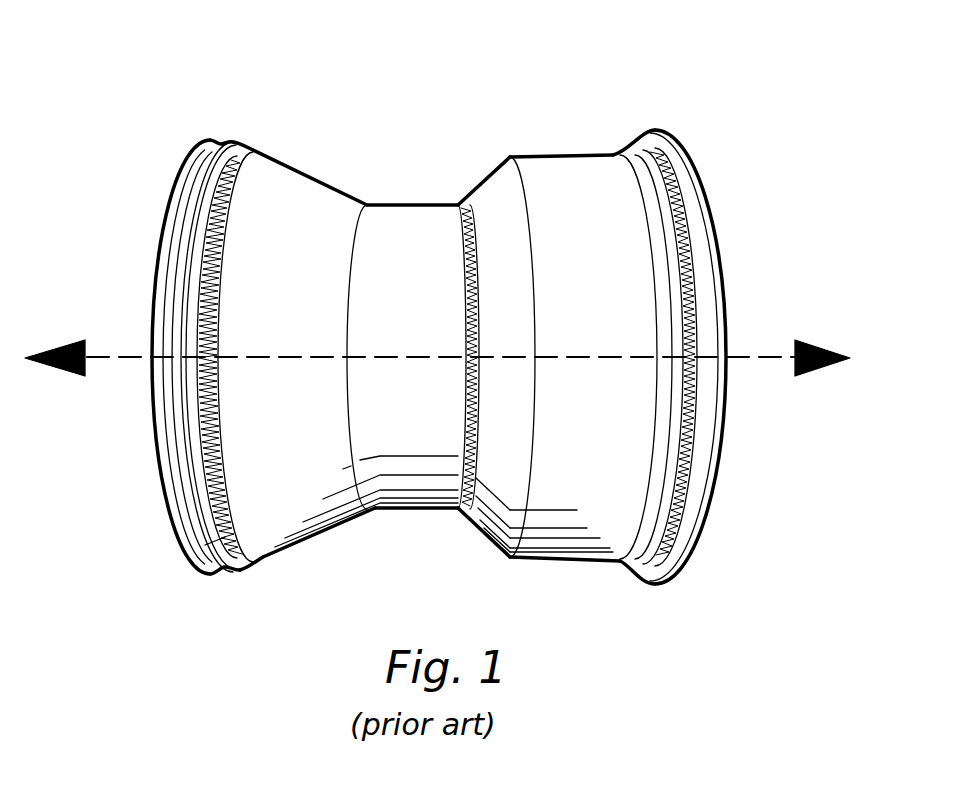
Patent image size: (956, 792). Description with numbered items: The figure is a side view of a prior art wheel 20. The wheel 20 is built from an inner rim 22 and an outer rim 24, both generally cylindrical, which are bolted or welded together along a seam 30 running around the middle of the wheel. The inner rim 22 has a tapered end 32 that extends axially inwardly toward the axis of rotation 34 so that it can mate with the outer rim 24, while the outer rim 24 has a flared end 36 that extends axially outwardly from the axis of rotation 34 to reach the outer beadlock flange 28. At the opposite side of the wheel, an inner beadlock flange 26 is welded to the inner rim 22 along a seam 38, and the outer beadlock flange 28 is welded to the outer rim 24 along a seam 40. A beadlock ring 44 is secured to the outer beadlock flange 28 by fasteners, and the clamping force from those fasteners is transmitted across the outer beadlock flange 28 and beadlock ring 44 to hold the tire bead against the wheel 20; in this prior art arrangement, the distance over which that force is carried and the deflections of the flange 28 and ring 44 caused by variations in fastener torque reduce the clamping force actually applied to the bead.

The prior art wheel 20 is at (600, 60).
The inner rim 22 is at (563, 157).
The outer rim 24 is at (408, 205).
The inner beadlock flange 26 is at (688, 152).
The outer beadlock flange 28 is at (252, 147).
The seam 30 is at (460, 478).
The tapered end 32 is at (487, 537).
The axis of rotation 34 is at (753, 360).
The flared end 36 is at (290, 556).
The seam 38 is at (623, 560).
The seam 40 is at (215, 448).
The beadlock ring 44 is at (185, 157).